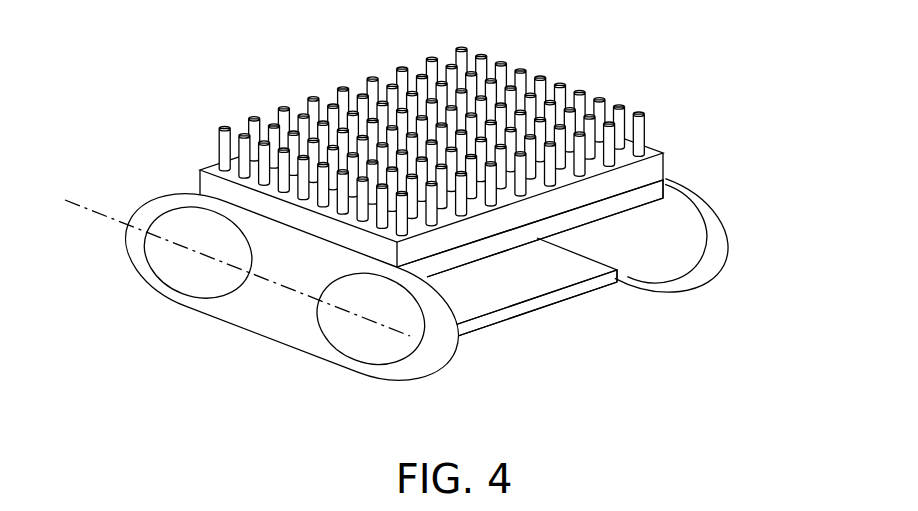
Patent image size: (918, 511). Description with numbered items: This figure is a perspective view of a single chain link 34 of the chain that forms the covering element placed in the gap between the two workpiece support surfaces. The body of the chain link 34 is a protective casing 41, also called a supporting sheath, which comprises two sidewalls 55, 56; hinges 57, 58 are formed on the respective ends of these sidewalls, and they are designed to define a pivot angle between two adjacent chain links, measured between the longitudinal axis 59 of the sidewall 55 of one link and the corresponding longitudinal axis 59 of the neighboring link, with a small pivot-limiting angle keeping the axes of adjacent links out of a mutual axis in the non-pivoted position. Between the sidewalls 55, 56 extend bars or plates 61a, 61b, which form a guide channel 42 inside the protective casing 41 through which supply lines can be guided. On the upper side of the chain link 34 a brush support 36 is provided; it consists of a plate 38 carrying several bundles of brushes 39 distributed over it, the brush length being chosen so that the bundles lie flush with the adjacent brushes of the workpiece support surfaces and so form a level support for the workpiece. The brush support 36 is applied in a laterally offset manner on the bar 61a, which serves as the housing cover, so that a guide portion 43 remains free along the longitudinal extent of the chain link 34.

The chain link 34 is at (192, 345).
The brush support 36 is at (431, 123).
The plate 38 is at (658, 150).
The bundles of brushes 39 is at (312, 99).
The protective casing 41 is at (538, 338).
The guide channel 42 is at (567, 267).
The guide portion 43 is at (698, 186).
The sidewall 55 is at (275, 330).
The sidewall 56 is at (687, 234).
The hinge 57 is at (372, 380).
The hinge 58 is at (167, 271).
The longitudinal axis 59 is at (91, 213).
The bar 61a is at (485, 247).
The bar 61b is at (550, 300).